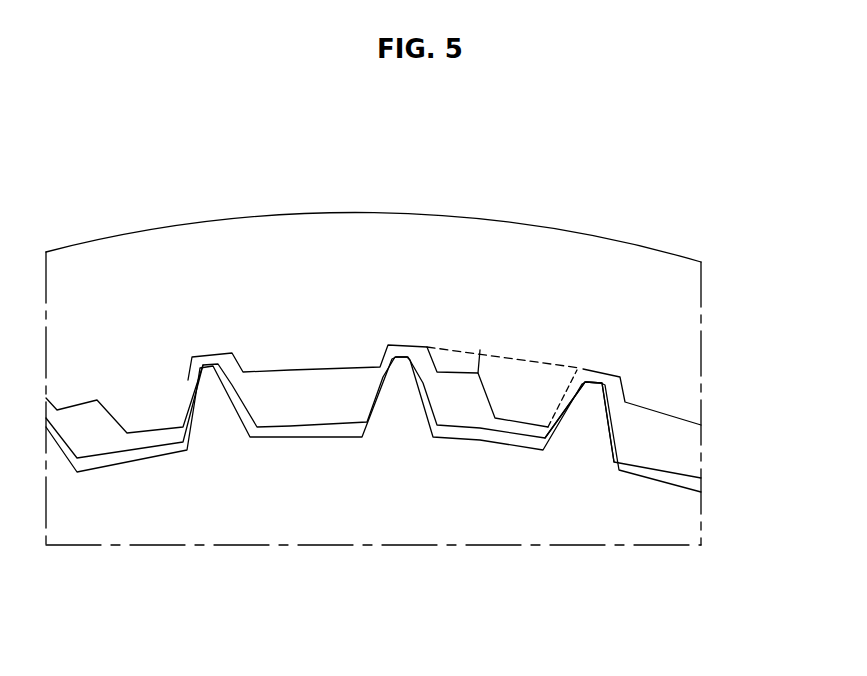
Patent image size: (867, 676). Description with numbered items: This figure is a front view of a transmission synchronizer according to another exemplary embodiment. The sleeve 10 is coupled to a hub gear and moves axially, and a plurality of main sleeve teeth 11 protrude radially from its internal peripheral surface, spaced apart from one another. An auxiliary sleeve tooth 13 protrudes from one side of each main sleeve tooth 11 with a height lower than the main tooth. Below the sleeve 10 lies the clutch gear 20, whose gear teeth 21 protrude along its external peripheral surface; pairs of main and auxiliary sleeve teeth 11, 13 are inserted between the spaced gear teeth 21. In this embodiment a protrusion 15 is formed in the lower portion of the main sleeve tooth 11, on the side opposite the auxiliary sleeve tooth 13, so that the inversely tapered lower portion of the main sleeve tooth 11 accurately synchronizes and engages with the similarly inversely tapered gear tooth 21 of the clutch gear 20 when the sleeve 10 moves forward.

The sleeve 10 is at (353, 255).
The main sleeve tooth 11 is at (528, 380).
The auxiliary sleeve tooth 13 is at (455, 360).
The protrusion 15 is at (558, 420).
The clutch gear 20 is at (470, 498).
The gear tooth 21 is at (595, 438).